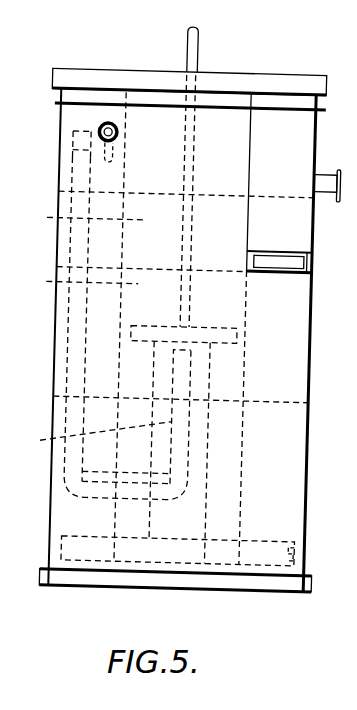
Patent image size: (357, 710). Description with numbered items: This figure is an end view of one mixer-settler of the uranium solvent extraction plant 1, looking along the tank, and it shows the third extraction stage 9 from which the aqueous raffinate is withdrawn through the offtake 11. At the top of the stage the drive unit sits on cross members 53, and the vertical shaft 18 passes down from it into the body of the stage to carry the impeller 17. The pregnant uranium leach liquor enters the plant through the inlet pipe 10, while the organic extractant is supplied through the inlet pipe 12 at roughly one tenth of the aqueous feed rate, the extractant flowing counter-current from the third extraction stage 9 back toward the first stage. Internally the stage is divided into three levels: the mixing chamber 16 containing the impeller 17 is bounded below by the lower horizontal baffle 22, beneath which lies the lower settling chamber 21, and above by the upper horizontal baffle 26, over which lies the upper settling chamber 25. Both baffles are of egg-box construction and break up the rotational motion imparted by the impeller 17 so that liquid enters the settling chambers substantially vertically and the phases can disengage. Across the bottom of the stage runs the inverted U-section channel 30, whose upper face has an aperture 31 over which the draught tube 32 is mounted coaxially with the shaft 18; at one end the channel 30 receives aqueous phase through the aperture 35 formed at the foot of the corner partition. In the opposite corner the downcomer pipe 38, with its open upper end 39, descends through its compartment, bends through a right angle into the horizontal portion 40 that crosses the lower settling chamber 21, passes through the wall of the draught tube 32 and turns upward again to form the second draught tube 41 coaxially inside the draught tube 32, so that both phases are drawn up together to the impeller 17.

The uranium solvent extraction plant 1 is at (52, 327).
The third extraction stage 9 is at (265, 323).
The inlet pipe 10 is at (323, 168).
The offtake 11 is at (276, 228).
The inlet pipe 12 is at (93, 130).
The mixing chamber 16 is at (132, 284).
The impeller 17 is at (200, 335).
The vertical shaft 18 is at (187, 48).
The lower settling chamber 21 is at (270, 510).
The lower horizontal baffle 22 is at (282, 458).
The upper settling chamber 25 is at (219, 127).
The upper horizontal baffle 26 is at (167, 215).
The inverted U-section channel 30 is at (166, 551).
The aperture 31 is at (182, 520).
The draught tube 32 is at (212, 436).
The aperture 35 is at (312, 550).
The downcomer pipe 38 is at (71, 381).
The open upper end 39 is at (74, 134).
The horizontal portion 40 is at (100, 502).
The second draught tube 41 is at (92, 439).
The cross members 53 is at (111, 77).